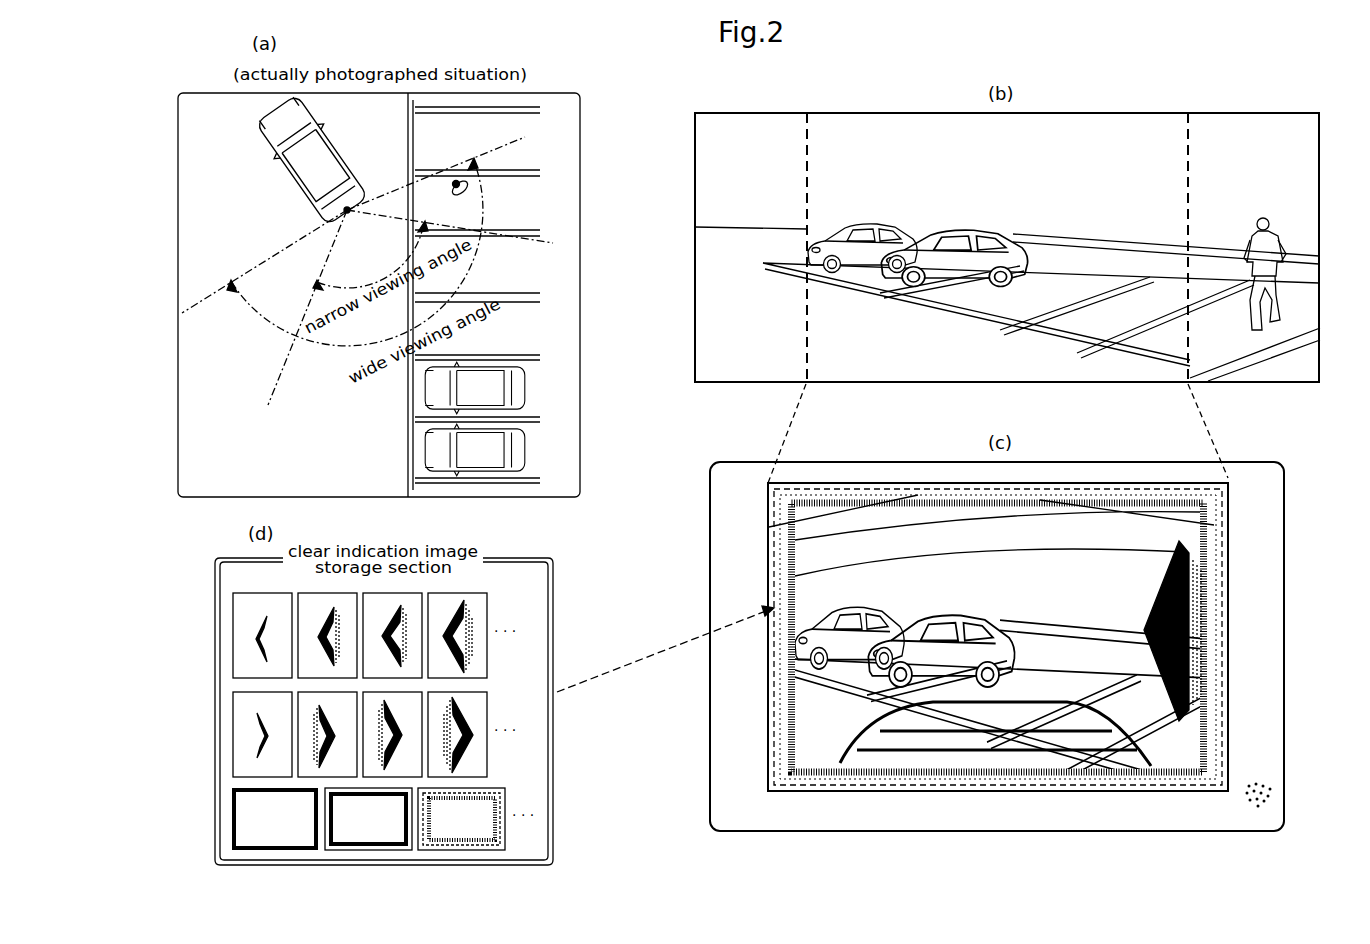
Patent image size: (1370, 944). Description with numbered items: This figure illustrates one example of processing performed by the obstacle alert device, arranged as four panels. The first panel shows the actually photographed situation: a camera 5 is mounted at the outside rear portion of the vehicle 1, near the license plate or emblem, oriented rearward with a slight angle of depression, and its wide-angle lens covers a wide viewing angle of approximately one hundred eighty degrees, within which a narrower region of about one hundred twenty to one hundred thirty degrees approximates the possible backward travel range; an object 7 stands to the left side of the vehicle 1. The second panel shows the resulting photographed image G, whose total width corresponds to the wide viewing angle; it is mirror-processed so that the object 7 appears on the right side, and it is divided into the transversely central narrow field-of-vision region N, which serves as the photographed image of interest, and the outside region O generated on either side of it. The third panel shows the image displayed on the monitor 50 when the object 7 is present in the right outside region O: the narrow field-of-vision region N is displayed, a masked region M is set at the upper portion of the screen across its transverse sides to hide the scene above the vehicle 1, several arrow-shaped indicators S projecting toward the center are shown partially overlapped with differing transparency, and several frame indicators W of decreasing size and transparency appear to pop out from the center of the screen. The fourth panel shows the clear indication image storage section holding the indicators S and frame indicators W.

The vehicle 1 is at (340, 157).
The camera 5 is at (350, 215).
The object 7 is at (458, 191).
The monitor 50 is at (707, 559).
The outside region O is at (727, 137).
The narrow field-of-vision region N is at (905, 140).
The photographed image G is at (693, 321).
The masked region M is at (822, 508).
The indicator S is at (1176, 548).
The frame indicator W is at (877, 785).